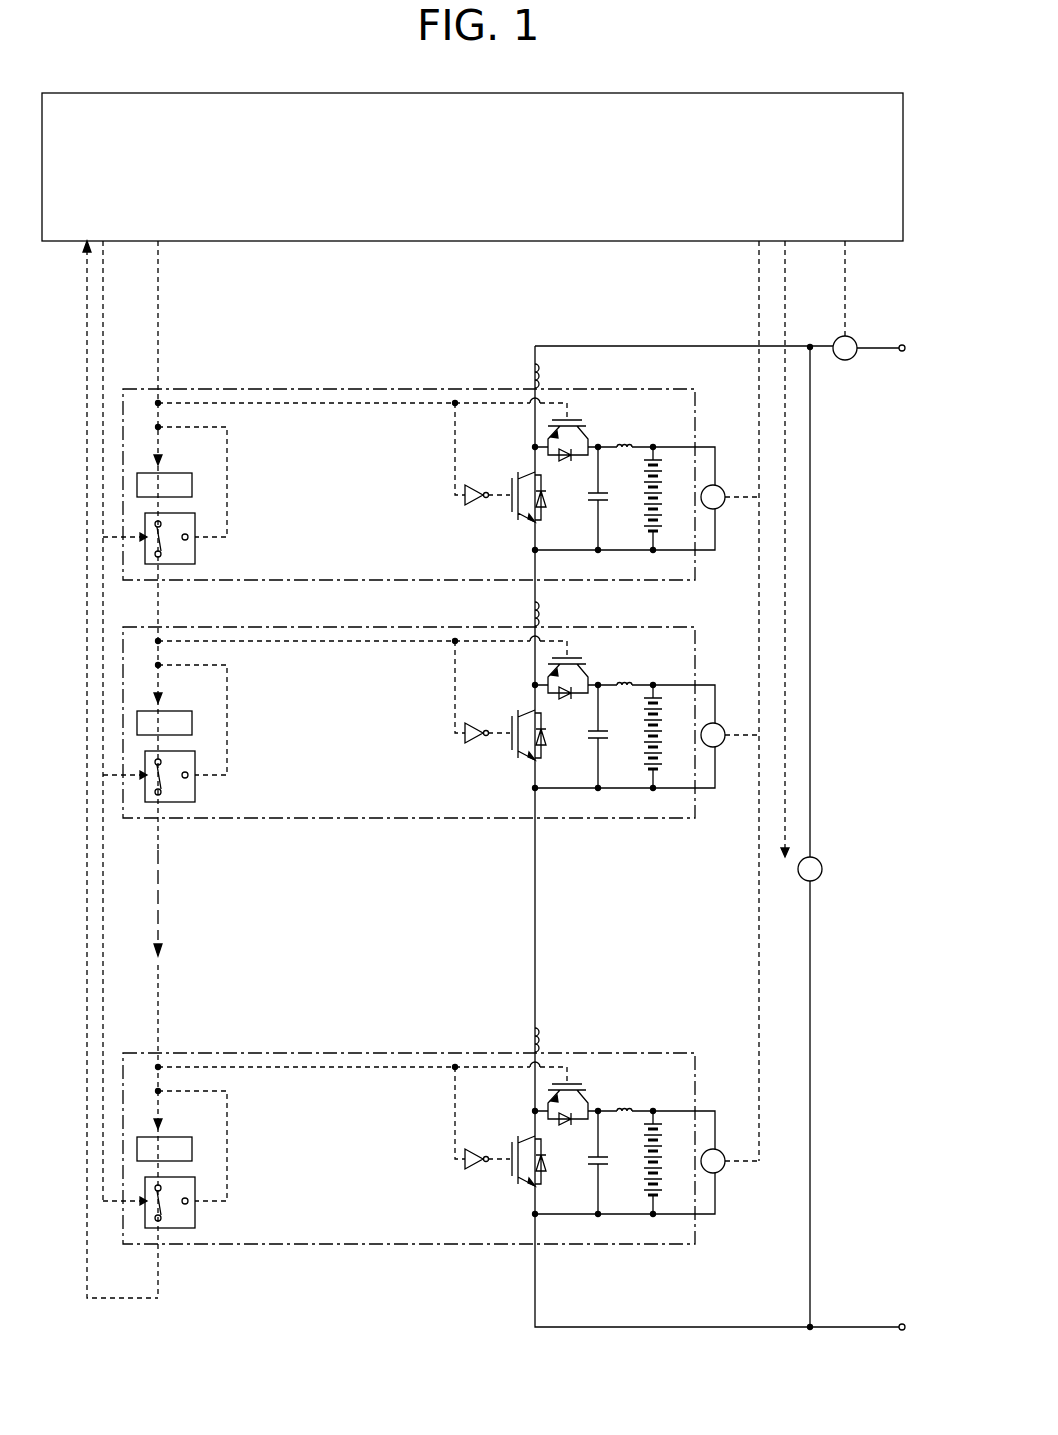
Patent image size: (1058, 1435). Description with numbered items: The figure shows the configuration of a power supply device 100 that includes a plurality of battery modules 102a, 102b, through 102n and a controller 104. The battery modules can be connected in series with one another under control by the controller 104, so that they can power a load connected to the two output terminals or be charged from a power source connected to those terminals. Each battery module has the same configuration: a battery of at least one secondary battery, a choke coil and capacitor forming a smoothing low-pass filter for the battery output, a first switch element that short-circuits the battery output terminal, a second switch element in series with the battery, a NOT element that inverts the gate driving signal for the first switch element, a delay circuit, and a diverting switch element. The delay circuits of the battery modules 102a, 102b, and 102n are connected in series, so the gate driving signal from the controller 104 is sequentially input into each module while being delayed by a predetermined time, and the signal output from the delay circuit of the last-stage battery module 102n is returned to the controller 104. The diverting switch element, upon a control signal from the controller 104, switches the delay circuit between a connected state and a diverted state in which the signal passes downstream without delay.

The power supply device 100 is at (482, 1374).
The controller 104 is at (823, 94).
The battery module 102a is at (677, 389).
The battery module 102b is at (431, 707).
The battery module 102n is at (431, 1133).